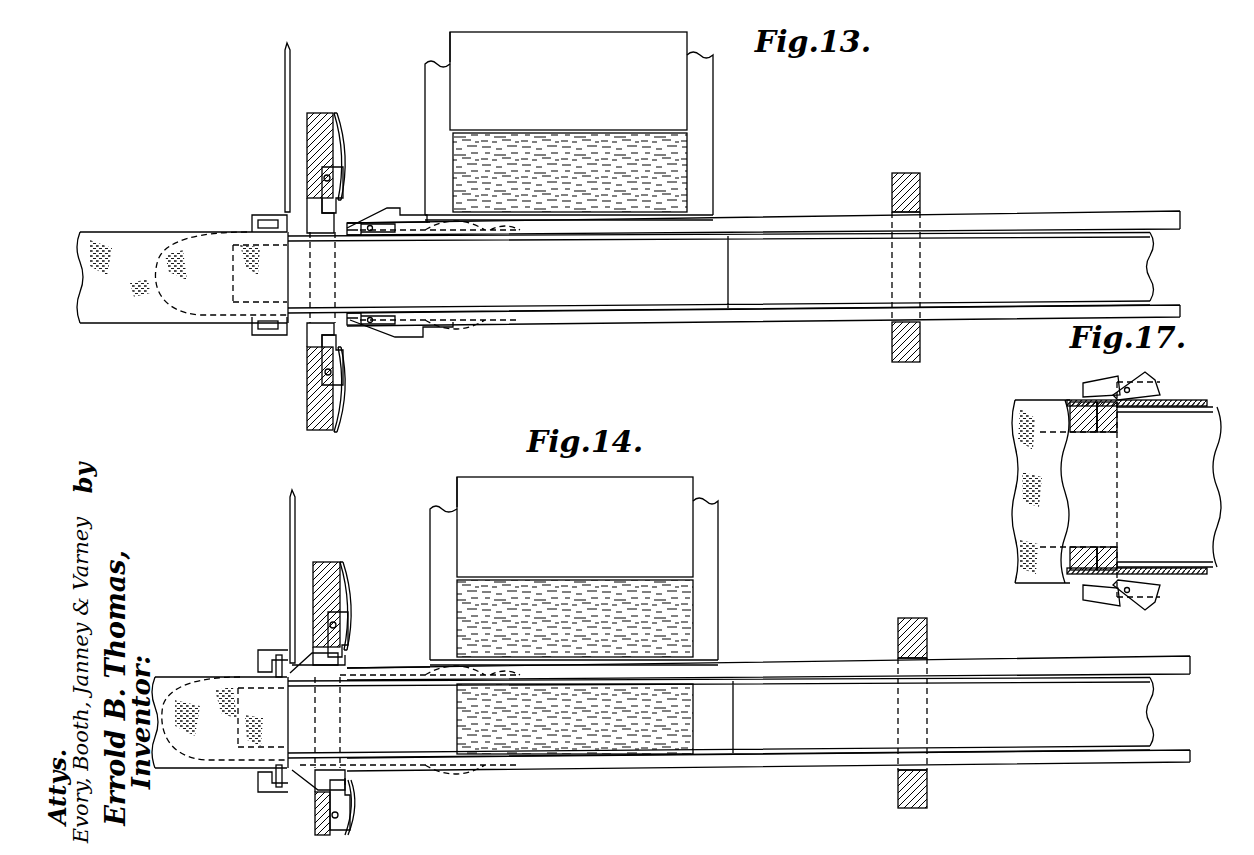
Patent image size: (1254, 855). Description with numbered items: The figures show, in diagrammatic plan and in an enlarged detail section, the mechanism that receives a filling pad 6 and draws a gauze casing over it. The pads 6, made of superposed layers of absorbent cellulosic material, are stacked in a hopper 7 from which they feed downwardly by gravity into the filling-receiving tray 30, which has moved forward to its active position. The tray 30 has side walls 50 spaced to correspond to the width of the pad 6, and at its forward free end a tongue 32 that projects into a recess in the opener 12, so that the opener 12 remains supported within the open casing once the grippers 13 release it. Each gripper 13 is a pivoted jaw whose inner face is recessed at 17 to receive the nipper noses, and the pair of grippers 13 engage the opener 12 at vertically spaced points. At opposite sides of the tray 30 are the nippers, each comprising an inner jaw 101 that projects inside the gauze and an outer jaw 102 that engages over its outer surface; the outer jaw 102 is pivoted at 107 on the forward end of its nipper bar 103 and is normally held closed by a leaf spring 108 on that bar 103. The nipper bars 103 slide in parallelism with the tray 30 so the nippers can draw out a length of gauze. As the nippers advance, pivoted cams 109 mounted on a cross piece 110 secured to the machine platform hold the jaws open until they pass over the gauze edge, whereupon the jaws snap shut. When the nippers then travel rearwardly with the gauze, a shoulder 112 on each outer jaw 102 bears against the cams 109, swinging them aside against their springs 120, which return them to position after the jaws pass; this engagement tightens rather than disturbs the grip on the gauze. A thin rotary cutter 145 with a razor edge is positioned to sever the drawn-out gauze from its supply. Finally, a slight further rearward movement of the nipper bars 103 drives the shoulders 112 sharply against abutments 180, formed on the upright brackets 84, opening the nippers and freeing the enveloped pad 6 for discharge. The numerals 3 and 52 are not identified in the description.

In FIG. 13, the plate / sheet material 3 is at (122, 242).
In FIG. 14, the plate / sheet material 3 is at (219, 707).
In FIG. 17, the plate / sheet material 3 is at (1078, 400).
In FIG. 13, the pad 6 is at (678, 168).
In FIG. 14, the pad 6 is at (598, 685).
In FIG. 13, the hopper 7 is at (672, 79).
In FIG. 14, the hopper 7 is at (599, 527).
In FIG. 13, the opener 12 is at (185, 233).
In FIG. 14, the opener 12 is at (224, 703).
In FIG. 17, the opener 12 is at (1118, 428).
In FIG. 13, the gripper 13 is at (270, 216).
In FIG. 14, the gripper 13 is at (255, 716).
In FIG. 13, the recess 17 is at (260, 221).
In FIG. 13, the filling-receiving tray 30 is at (721, 277).
In FIG. 14, the filling-receiving tray 30 is at (721, 722).
In FIG. 17, the filling-receiving tray 30 is at (1215, 483).
In FIG. 13, the tongue 32 is at (258, 298).
In FIG. 14, the tongue 32 is at (242, 719).
In FIG. 17, the tongue 32 is at (1095, 484).
In FIG. 13, the side wall 50 is at (780, 216).
In FIG. 14, the side wall 50 is at (571, 711).
In FIG. 17, the side wall 50 is at (1200, 408).
In FIG. 13, the frame 52 is at (712, 121).
In FIG. 14, the frame 52 is at (594, 571).
In FIG. 13, the bracket 84 is at (921, 186).
In FIG. 14, the bracket 84 is at (933, 710).
In FIG. 13, the inner jaw 101 is at (353, 237).
In FIG. 17, the inner jaw 101 is at (1092, 432).
In FIG. 13, the outer jaw 102 is at (350, 226).
In FIG. 14, the outer jaw 102 is at (276, 710).
In FIG. 17, the outer jaw 102 is at (1105, 377).
In FIG. 13, the nipper bar 103 is at (990, 207).
In FIG. 14, the nipper bar 103 is at (768, 713).
In FIG. 13, the pivot 107 is at (375, 231).
In FIG. 17, the pivot 107 is at (1148, 378).
In FIG. 13, the leaf spring 108 is at (466, 234).
In FIG. 14, the leaf spring 108 is at (410, 713).
In FIG. 13, the cam 109 is at (340, 192).
In FIG. 14, the cam 109 is at (365, 721).
In FIG. 13, the cross piece 110 is at (318, 114).
In FIG. 14, the cross piece 110 is at (336, 682).
In FIG. 13, the shoulder 112 is at (394, 207).
In FIG. 14, the shoulder 112 is at (331, 716).
In FIG. 13, the spring 120 is at (346, 160).
In FIG. 14, the spring 120 is at (370, 698).
In FIG. 13, the rotary cutter 145 is at (285, 123).
In FIG. 14, the rotary cutter 145 is at (266, 576).
In FIG. 13, the abutment 180 is at (893, 340).
In FIG. 14, the abutment 180 is at (882, 713).